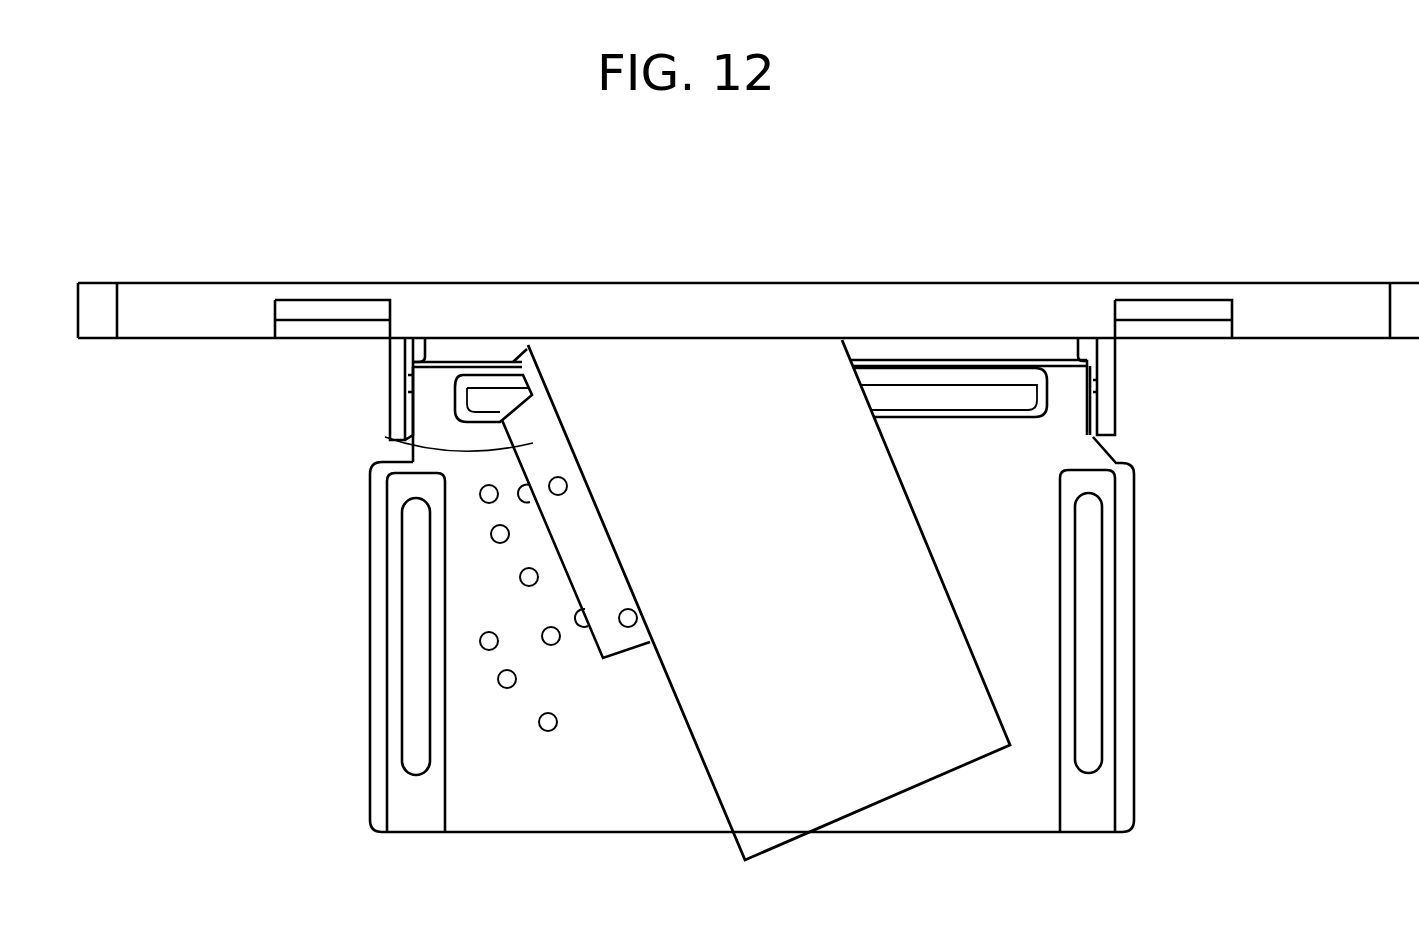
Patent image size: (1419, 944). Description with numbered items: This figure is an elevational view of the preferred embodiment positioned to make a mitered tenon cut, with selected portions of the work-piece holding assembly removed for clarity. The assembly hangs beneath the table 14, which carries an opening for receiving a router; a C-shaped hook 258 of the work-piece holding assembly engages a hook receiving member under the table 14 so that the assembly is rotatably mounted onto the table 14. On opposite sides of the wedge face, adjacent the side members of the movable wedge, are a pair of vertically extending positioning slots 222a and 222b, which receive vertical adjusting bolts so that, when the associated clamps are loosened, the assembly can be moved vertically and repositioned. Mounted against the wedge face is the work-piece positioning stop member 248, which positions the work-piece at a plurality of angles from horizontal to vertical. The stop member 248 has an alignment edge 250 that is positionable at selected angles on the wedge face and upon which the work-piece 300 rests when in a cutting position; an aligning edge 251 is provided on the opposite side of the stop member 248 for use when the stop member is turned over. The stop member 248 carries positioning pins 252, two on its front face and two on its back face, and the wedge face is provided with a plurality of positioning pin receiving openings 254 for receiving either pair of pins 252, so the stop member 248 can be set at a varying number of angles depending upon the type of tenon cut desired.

The table 14 is at (1033, 296).
The positioning slot 222a is at (1092, 690).
The positioning slot 222b is at (418, 658).
The work-piece positioning stop member 248 is at (505, 445).
The alignment edge 250 is at (574, 438).
The aligning edge 251 is at (402, 448).
The positioning pins 252 is at (560, 486).
The positioning pin receiving openings 254 is at (497, 534).
The C-shaped hook 258 is at (918, 363).
The work-piece 300 is at (820, 613).